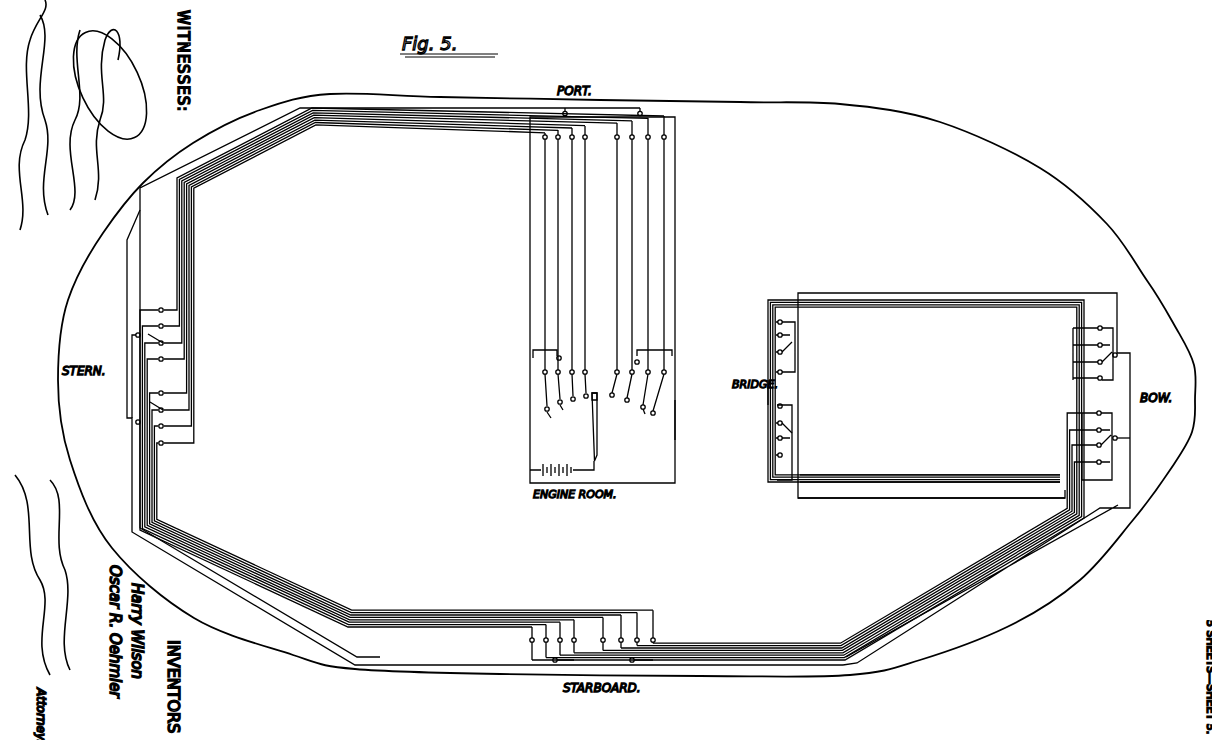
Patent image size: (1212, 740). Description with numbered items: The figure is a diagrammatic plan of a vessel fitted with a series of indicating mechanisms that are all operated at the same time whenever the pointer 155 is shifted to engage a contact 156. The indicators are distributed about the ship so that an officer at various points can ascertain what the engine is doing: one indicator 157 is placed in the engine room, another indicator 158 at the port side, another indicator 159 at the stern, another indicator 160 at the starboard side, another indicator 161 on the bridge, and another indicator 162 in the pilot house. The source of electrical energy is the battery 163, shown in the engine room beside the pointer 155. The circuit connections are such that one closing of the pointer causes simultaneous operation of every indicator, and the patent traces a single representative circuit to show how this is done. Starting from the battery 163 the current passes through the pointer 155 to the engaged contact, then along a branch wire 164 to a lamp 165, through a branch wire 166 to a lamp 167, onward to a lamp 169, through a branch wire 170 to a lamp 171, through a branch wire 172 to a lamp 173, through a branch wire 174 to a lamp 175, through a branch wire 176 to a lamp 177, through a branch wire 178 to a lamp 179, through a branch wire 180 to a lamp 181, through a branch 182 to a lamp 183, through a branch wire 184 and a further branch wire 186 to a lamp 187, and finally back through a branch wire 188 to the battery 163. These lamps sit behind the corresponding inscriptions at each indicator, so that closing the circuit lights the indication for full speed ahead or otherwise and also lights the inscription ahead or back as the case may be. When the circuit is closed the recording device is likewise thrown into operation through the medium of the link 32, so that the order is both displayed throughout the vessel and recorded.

The link 32 is at (598, 417).
The pointer 155 is at (597, 437).
The contact 156 is at (644, 414).
The indicating mechanism in the engine room 157 is at (538, 375).
The indicating mechanism at the port side 158 is at (649, 117).
The indicating mechanism at the stern 159 is at (170, 378).
The indicating mechanism at the starboard side 160 is at (612, 617).
The indicating mechanism on the bridge 161 is at (788, 410).
The indicating mechanism in the pilot house 162 is at (1073, 368).
The battery 163 is at (545, 465).
The branch wire 164 is at (612, 385).
The lamp 165 is at (612, 370).
The branch wire 166 is at (613, 237).
The lamp 167 is at (620, 130).
The lamp 169 is at (164, 342).
The branch wire 170 is at (184, 528).
The lamp 171 is at (575, 637).
The branch wire 172 is at (938, 595).
The lamp 173 is at (1099, 411).
The branch wire 174 is at (972, 487).
The lamp 175 is at (781, 404).
The branch wire 176 is at (765, 413).
The lamp 177 is at (790, 432).
The branch wire 178 is at (897, 487).
The lamp 179 is at (1117, 438).
The branch wire 180 is at (641, 112).
The lamp 181 is at (634, 658).
The branch 182 is at (237, 592).
The lamp 183 is at (136, 333).
The branch wire 184 is at (137, 242).
The branch wire 186 is at (677, 193).
The lamp 187 is at (637, 350).
The branch wire 188 is at (675, 420).